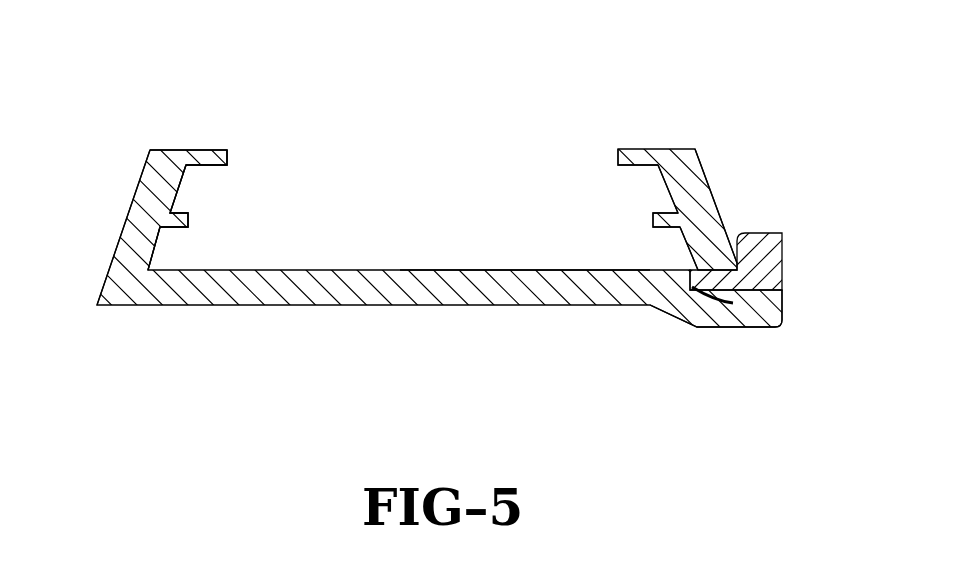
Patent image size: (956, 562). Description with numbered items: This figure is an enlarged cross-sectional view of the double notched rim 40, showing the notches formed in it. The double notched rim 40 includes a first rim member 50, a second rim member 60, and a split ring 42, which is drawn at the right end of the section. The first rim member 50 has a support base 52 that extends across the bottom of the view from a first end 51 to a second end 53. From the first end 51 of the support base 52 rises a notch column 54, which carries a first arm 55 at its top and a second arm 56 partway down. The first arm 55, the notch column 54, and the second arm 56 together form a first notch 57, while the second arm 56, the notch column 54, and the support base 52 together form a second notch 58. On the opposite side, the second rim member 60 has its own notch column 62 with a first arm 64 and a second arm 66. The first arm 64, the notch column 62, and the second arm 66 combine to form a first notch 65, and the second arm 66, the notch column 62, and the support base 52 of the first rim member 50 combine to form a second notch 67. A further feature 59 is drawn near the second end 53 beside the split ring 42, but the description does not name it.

The double notched rim 40 is at (396, 72).
The split ring 42 is at (760, 262).
The first rim member 50 is at (321, 297).
The first end 51 is at (165, 297).
The support base 52 is at (500, 297).
The second end 53 is at (702, 312).
The notch column 54 is at (137, 218).
The first arm 55 is at (223, 157).
The second arm 56 is at (187, 218).
The first notch 57 is at (195, 192).
The second notch 58 is at (170, 252).
The notch 59 is at (733, 300).
The second rim member 60 is at (685, 163).
The notch column 62 is at (703, 210).
The first arm 64 is at (632, 157).
The first notch 65 is at (660, 190).
The second arm 66 is at (667, 219).
The second notch 67 is at (680, 257).